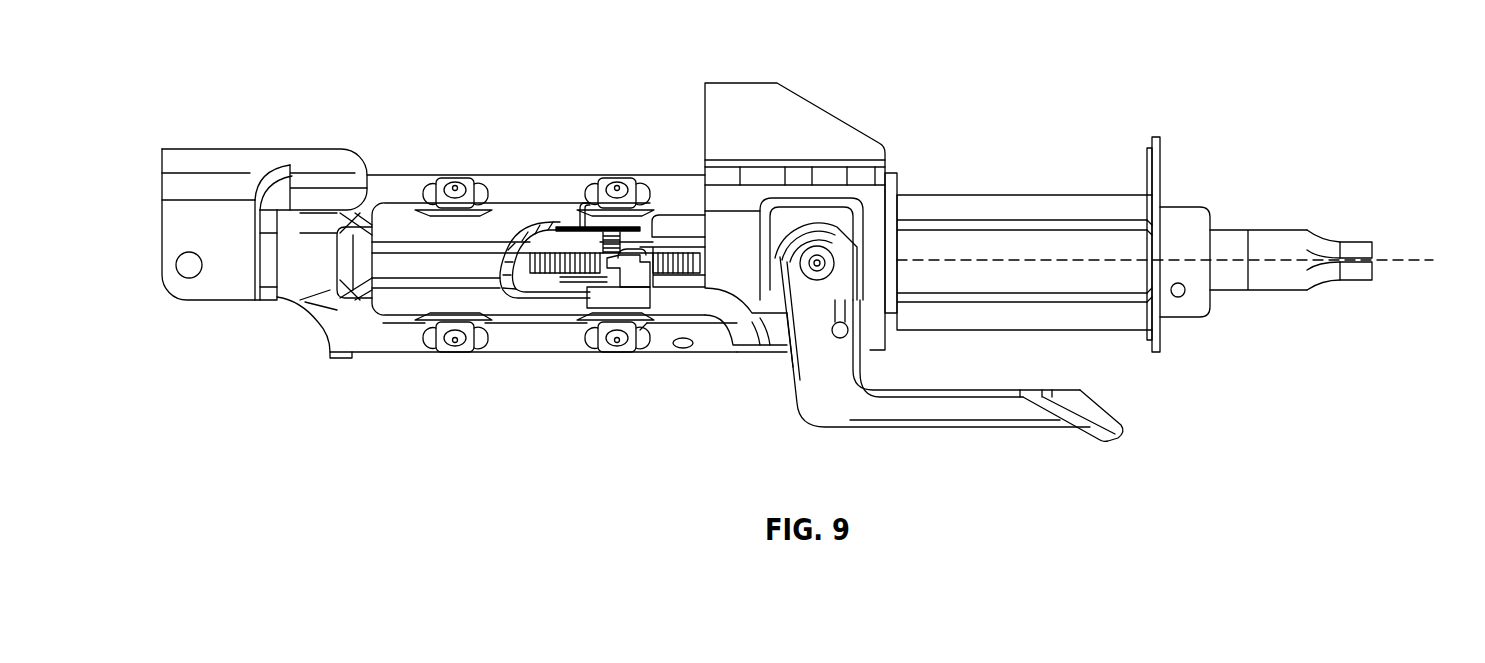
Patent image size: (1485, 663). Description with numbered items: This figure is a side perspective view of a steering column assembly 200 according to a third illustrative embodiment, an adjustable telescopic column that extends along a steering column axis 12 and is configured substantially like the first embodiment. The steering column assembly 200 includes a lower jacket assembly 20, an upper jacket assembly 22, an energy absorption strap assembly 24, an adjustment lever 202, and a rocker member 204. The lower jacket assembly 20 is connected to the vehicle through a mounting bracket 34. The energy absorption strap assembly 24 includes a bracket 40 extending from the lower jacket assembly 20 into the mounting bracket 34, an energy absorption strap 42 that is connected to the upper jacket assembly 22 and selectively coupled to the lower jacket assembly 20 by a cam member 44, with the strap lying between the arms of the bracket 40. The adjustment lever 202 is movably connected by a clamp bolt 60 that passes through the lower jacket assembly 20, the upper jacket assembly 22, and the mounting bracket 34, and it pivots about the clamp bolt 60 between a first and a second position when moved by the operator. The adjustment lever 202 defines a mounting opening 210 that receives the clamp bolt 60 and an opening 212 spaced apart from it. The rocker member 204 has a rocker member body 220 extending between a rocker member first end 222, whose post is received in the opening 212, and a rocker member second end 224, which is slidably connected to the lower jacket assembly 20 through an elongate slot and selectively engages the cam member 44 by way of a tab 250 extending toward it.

The steering column assembly 200 is at (1100, 55).
The steering column axis 12 is at (1397, 257).
The lower jacket assembly 20 is at (576, 362).
The upper jacket assembly 22 is at (1048, 185).
The energy absorption strap assembly 24 is at (654, 224).
The mounting bracket 34 is at (715, 103).
The bracket 40 is at (574, 185).
The energy absorption strap 42 is at (550, 225).
The cam member 44 is at (565, 268).
The clamp bolt 60 is at (818, 262).
The adjustment lever 202 is at (906, 436).
The rocker member 204 is at (845, 335).
The mounting opening 210 is at (813, 258).
The opening 212 is at (842, 340).
The rocker member body 220 is at (752, 327).
The rocker member first end 222 is at (772, 337).
The rocker member second end 224 is at (637, 340).
The tab 250 is at (705, 163).